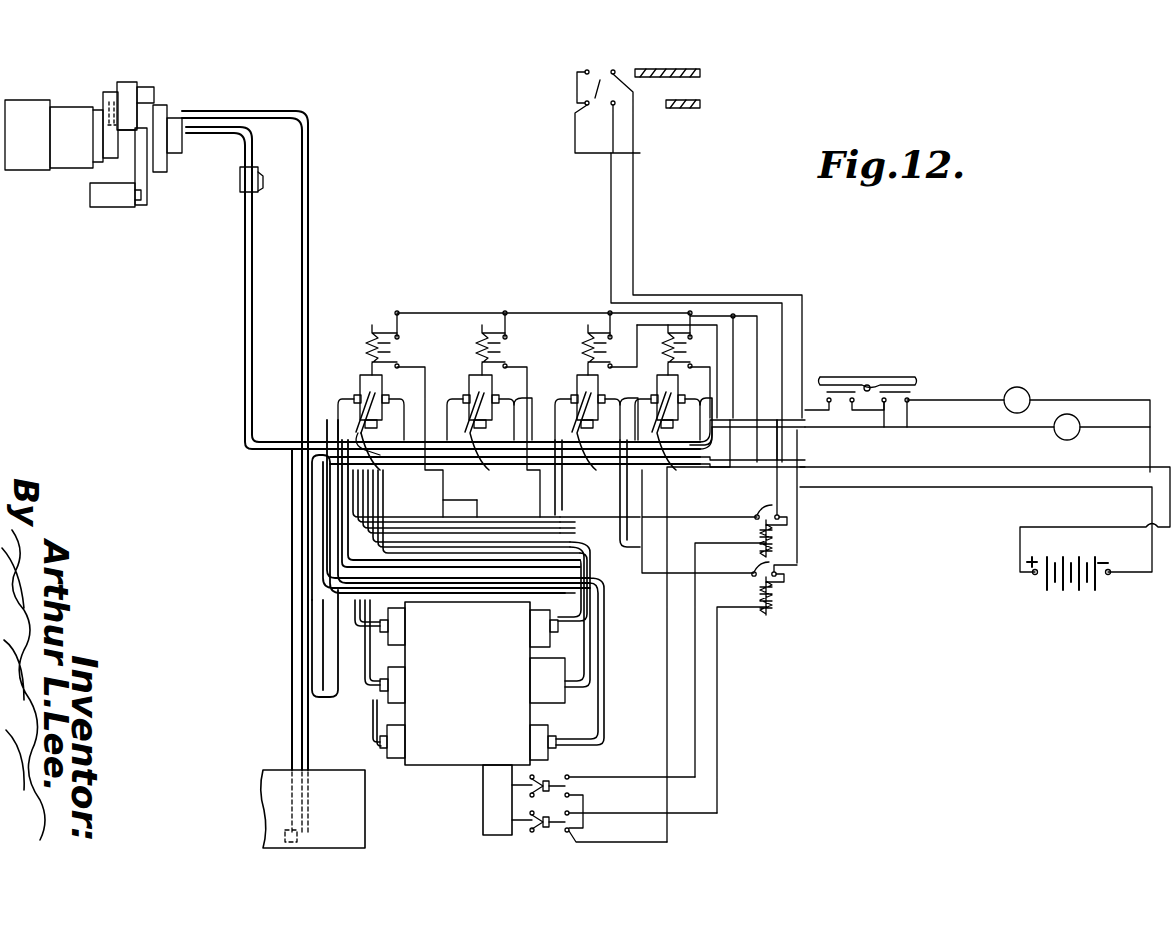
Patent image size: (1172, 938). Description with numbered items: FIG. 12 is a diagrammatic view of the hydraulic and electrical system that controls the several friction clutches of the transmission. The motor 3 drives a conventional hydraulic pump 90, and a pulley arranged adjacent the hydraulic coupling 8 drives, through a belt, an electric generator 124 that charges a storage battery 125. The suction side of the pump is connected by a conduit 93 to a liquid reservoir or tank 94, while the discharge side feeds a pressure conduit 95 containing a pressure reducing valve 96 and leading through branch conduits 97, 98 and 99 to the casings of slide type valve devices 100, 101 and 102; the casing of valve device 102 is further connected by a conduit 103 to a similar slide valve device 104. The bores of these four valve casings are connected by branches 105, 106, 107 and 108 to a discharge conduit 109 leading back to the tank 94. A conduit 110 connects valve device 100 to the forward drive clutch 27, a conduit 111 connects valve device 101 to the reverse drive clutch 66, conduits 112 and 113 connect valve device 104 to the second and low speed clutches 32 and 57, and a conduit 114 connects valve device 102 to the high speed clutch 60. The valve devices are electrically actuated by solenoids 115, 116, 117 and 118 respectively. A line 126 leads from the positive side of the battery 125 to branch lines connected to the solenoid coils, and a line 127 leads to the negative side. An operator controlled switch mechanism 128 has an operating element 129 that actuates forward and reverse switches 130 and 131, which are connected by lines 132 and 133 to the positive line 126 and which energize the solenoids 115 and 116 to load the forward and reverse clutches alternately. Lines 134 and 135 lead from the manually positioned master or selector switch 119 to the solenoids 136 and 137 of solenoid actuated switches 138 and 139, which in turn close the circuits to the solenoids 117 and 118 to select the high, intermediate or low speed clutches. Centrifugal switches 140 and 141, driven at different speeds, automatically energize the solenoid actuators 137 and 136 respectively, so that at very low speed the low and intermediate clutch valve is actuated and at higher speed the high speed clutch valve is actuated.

The motor 3 is at (29, 108).
The hydraulic pump 90 is at (114, 104).
The hydraulic coupling 8 is at (183, 171).
The electric generator 124 is at (108, 205).
The pressure reducing valve 96 is at (259, 174).
The conduit 93 is at (310, 230).
The pressure conduit 95 is at (245, 324).
The master or selector switch 119 is at (638, 69).
The solenoid 118 is at (380, 350).
The solenoid 117 is at (488, 350).
The solenoid 116 is at (594, 350).
The solenoid 115 is at (676, 350).
The slide valve device 104 is at (383, 392).
The slide type valve device 102 is at (480, 380).
The slide type valve device 101 is at (583, 380).
The slide type valve device 100 is at (680, 395).
The branch conduit 99 is at (518, 400).
The branch conduit 98 is at (620, 400).
The branch conduit 97 is at (700, 443).
The conduit 103 is at (380, 408).
The branch 108 is at (382, 459).
The branch 107 is at (484, 440).
The branch 106 is at (592, 440).
The branch 105 is at (680, 440).
The conduit 113 is at (325, 415).
The conduit 112 is at (346, 500).
The conduit 114 is at (447, 492).
The conduit 111 is at (540, 500).
The conduit 110 is at (626, 503).
The discharge conduit 109 is at (316, 668).
The operating element 129 is at (850, 380).
The operator controlled switch mechanism 128 is at (890, 378).
The forward switch 130 is at (838, 402).
The reverse switch 131 is at (895, 410).
The line 133 is at (978, 392).
The line 132 is at (958, 427).
The positive line 126 is at (1030, 470).
The line 127 is at (972, 492).
The storage battery 125 is at (1060, 584).
The line 134 is at (778, 488).
The line 135 is at (797, 505).
The solenoid actuated switch 138 is at (760, 508).
The solenoid 136 is at (758, 538).
The solenoid actuated switch 139 is at (752, 565).
The solenoid 137 is at (758, 596).
The forward drive clutch 27 is at (400, 632).
The second speed clutch 32 is at (540, 635).
The high speed clutch 60 is at (390, 690).
The reverse drive clutch 66 is at (390, 744).
The low speed clutch 57 is at (545, 740).
The centrifugal switch 141 is at (555, 780).
The centrifugal switch 140 is at (543, 832).
The liquid reservoir or tank 94 is at (280, 806).